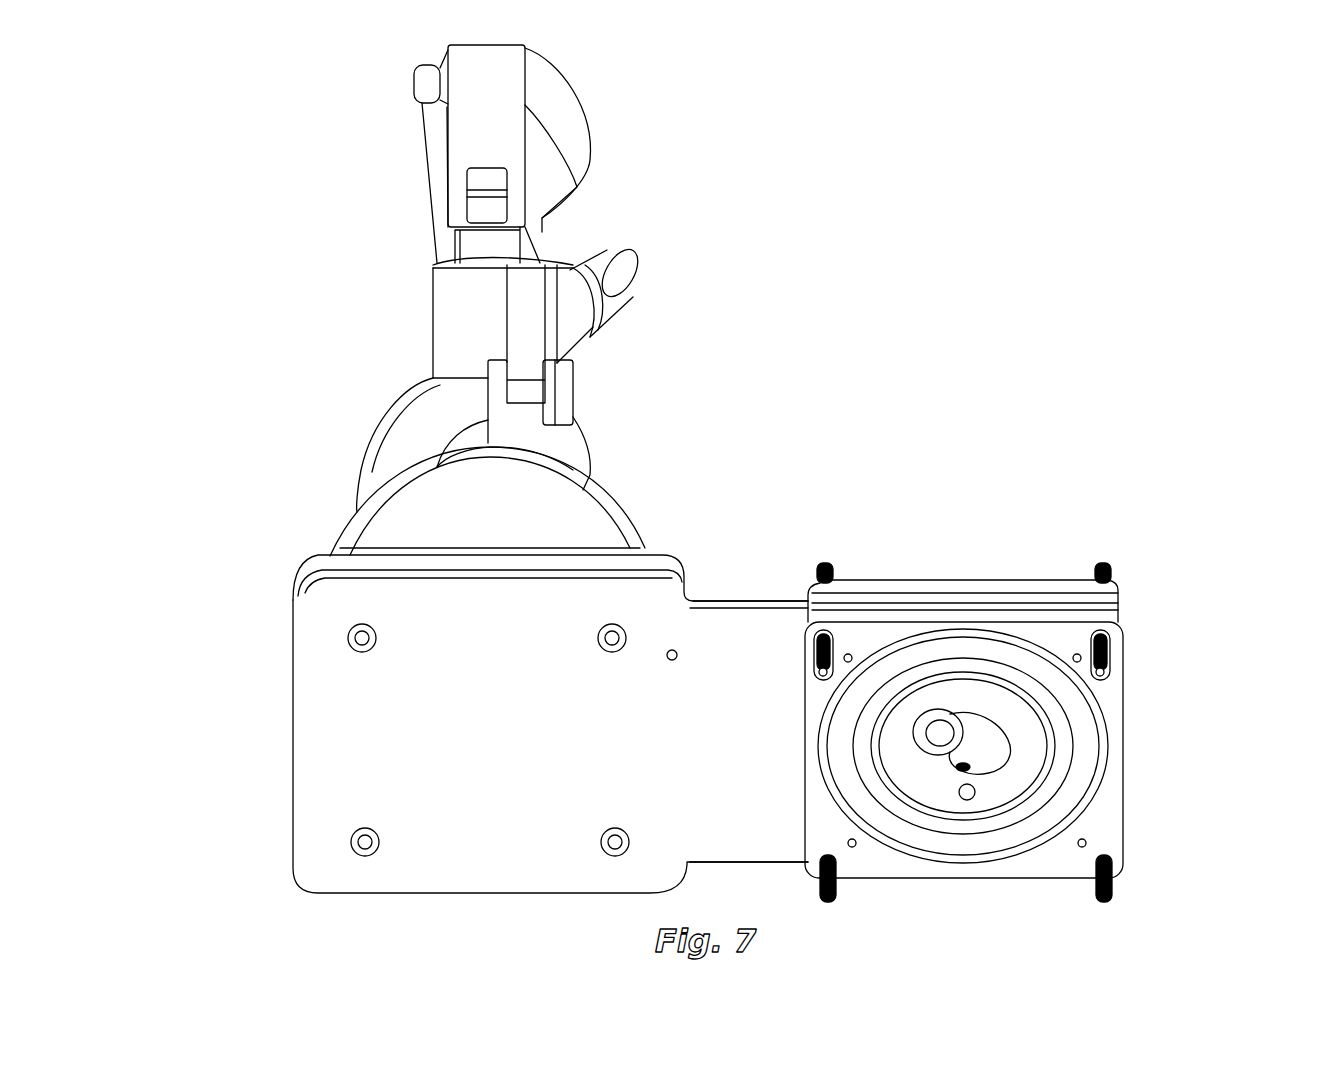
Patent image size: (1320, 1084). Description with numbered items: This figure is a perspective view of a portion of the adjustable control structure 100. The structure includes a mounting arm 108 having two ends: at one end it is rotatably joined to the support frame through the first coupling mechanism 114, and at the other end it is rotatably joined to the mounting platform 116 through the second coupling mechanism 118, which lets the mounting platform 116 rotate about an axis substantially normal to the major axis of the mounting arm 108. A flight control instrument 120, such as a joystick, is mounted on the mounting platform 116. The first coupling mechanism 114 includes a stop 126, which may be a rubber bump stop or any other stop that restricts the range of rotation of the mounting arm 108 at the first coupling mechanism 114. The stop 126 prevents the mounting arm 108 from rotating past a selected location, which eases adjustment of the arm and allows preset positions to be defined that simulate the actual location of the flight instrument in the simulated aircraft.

The adjustable control structure 100 is at (1117, 74).
The mounting arm 108 is at (750, 675).
The first coupling mechanism 114 is at (1050, 692).
The mounting platform 116 is at (318, 566).
The second coupling mechanism 118 is at (332, 710).
The flight control instrument 120 is at (390, 177).
The stop 126 is at (940, 735).